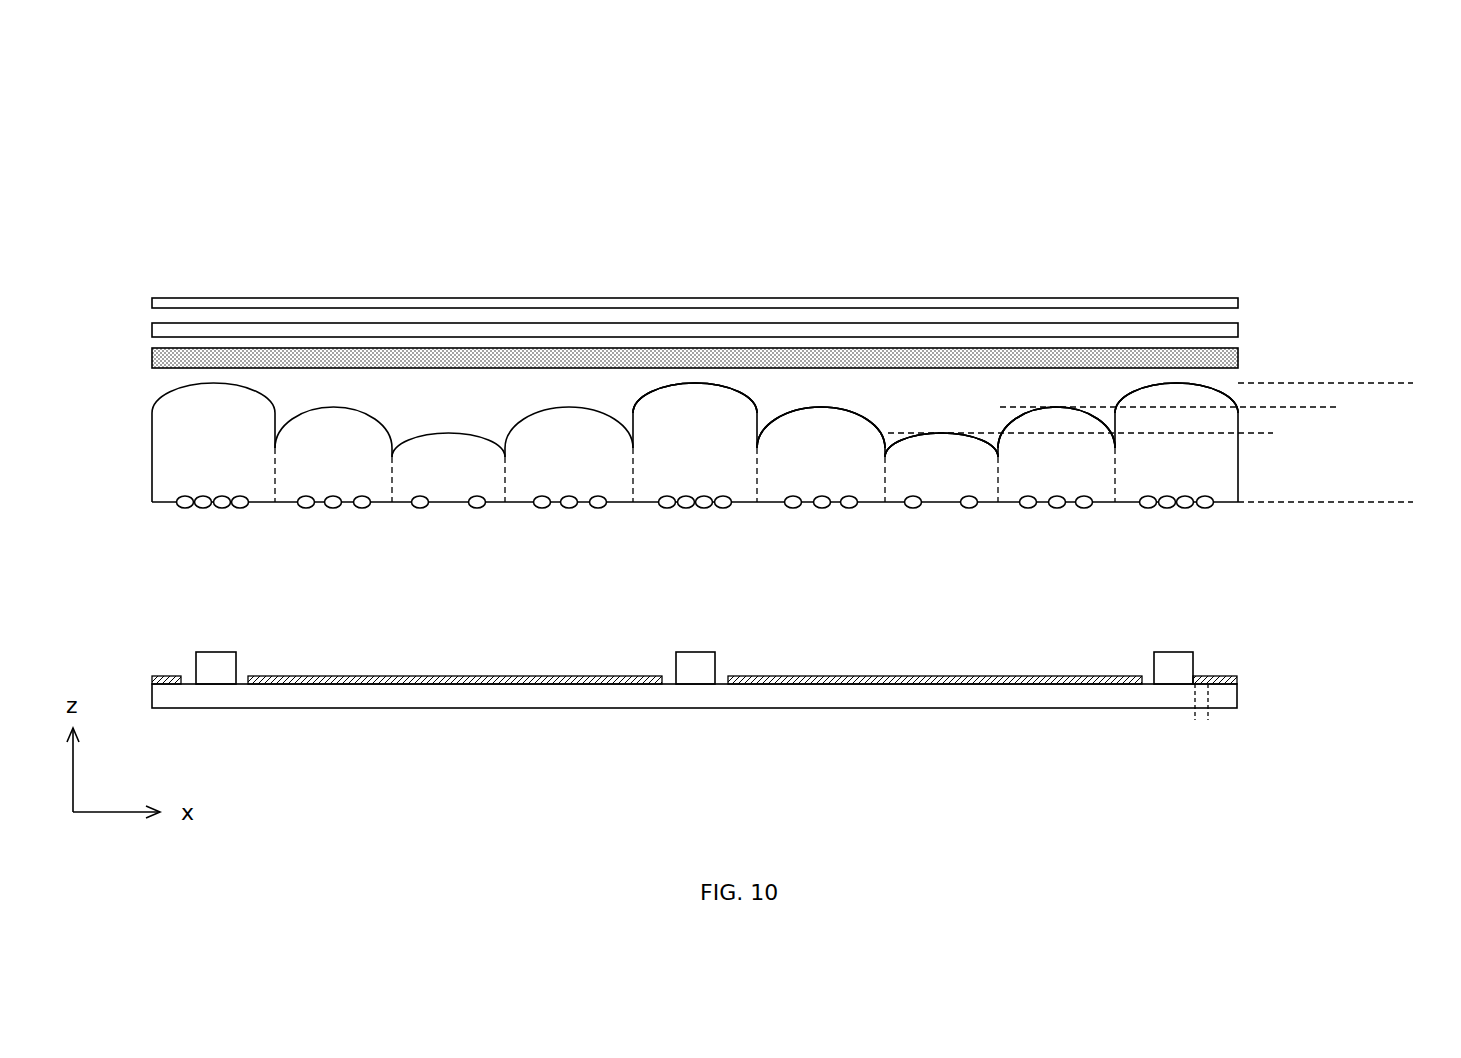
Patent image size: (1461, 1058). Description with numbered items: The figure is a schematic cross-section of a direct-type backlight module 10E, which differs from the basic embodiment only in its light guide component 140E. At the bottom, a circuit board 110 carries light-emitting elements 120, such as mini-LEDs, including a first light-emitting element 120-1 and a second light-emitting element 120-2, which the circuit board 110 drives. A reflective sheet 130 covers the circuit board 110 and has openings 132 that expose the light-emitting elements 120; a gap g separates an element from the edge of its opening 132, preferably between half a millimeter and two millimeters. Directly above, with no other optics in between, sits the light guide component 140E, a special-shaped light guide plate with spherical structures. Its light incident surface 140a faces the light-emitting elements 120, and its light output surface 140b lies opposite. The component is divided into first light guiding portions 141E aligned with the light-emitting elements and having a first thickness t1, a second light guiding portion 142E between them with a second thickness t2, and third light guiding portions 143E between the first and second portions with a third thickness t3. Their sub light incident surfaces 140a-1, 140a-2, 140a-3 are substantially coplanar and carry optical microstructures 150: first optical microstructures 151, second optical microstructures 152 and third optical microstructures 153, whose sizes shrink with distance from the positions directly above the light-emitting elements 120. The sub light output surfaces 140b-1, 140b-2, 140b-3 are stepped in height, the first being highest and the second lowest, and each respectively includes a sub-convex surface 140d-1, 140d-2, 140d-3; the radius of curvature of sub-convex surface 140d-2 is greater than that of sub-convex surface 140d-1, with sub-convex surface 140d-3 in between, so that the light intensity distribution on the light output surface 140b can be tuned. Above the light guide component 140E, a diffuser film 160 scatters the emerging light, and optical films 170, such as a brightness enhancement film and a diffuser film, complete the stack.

The backlight module 10E is at (1384, 812).
The circuit board 110 is at (1223, 696).
The light-emitting elements 120 is at (403, 50).
The first light-emitting element 120-1 is at (1165, 666).
The second light-emitting element 120-2 is at (685, 667).
The reflective sheet 130 is at (1238, 680).
The openings 132 is at (1203, 680).
The light guide component 140E is at (598, 50).
The first light guiding portion 141E is at (1163, 393).
The second light guiding portion 142E is at (930, 448).
The third light guiding portion 143E is at (1043, 422).
The light incident surface 140a is at (791, 50).
The first sub light incident surface 140a-1 is at (1231, 517).
The second sub light incident surface 140a-2 is at (993, 548).
The third sub light incident surface 140a-3 is at (1109, 517).
The light output surface 140b is at (1016, 50).
The first sub light output surface 140b-1 is at (915, 231).
The second sub light output surface 140b-2 is at (969, 271).
The third sub light output surface 140b-3 is at (916, 284).
The sub-convex surface 140d-1 is at (1141, 380).
The sub-convex surface 140d-2 is at (903, 440).
The sub-convex surface 140d-3 is at (1017, 415).
The optical microstructures 150 is at (1224, 50).
The first optical microstructures 151 is at (687, 523).
The second optical microstructures 152 is at (917, 520).
The third optical microstructures 153 is at (822, 523).
The diffuser film 160 is at (1238, 358).
The optical film 170 is at (1238, 303).
The gap g is at (1225, 725).
The first thickness t1 is at (1409, 383).
The second thickness t2 is at (1270, 433).
The third thickness t3 is at (1336, 407).